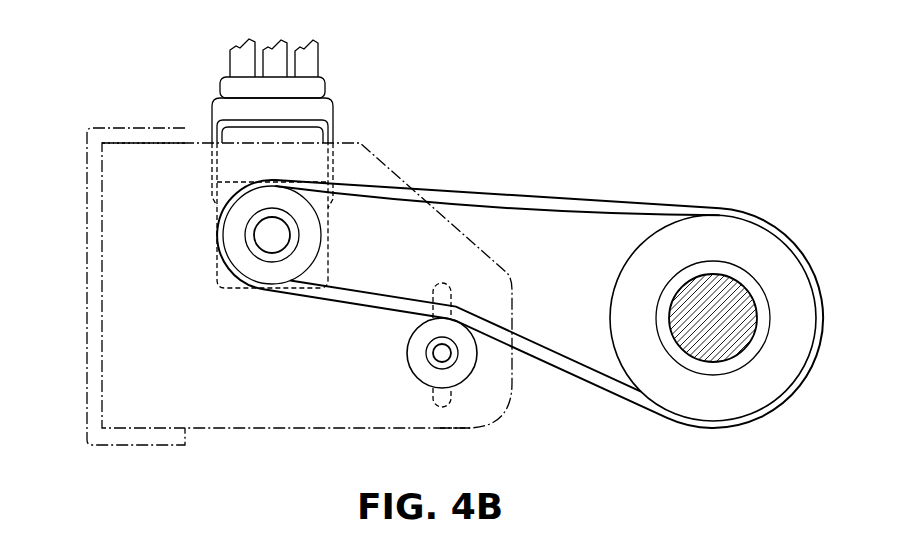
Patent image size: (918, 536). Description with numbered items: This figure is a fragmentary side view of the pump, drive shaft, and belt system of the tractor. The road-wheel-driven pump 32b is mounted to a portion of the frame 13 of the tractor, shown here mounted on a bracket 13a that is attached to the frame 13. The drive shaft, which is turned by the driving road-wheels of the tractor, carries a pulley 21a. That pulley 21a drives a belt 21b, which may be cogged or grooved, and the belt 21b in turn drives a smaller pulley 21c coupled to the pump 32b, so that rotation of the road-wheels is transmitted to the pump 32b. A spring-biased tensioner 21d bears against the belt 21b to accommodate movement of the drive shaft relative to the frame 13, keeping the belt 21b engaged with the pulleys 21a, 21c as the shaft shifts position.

The frame 13 is at (87, 266).
The bracket 13a is at (437, 429).
The pulley 21a is at (610, 318).
The belt 21b is at (498, 196).
The pulley 21c is at (325, 237).
The spring-biased tensioner 21d is at (407, 353).
The road-wheel-driven pump 32b is at (333, 95).